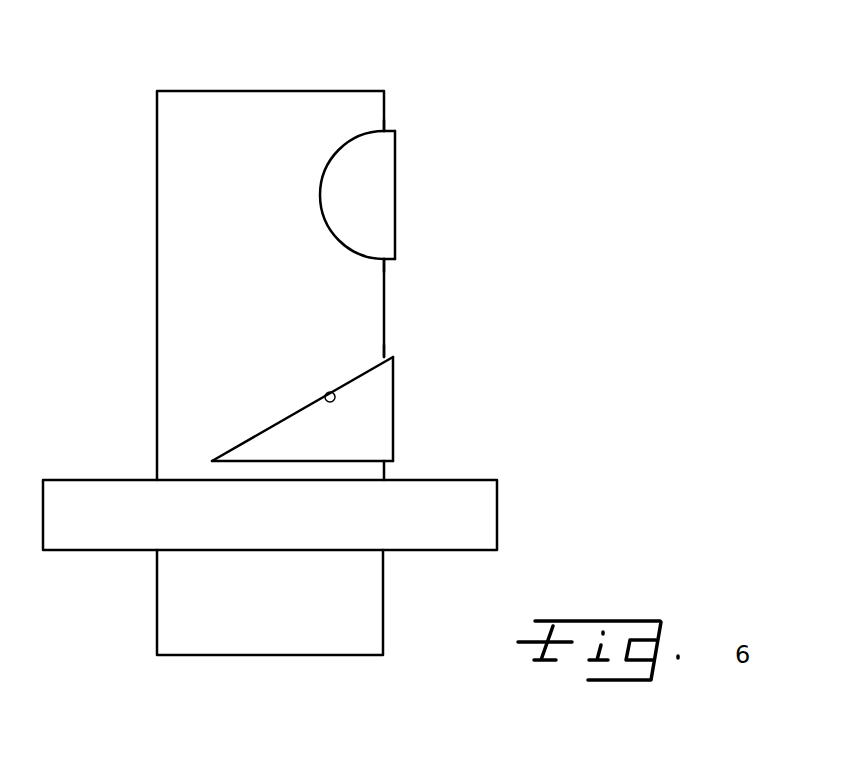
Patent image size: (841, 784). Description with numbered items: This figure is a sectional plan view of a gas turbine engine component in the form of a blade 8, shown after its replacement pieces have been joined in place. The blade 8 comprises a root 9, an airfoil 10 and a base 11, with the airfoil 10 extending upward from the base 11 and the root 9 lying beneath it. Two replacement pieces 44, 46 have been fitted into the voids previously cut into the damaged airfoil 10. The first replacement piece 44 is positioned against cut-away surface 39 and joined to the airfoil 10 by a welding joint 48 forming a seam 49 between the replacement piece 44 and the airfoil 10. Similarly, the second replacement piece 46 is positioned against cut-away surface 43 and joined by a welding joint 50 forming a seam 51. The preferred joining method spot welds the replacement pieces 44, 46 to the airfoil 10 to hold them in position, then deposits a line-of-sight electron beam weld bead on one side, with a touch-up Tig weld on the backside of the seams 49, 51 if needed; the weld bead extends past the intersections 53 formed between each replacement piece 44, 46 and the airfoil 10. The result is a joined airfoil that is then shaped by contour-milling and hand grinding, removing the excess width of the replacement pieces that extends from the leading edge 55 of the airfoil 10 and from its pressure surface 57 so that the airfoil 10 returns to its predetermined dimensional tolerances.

The blade 8 is at (330, 567).
The root 9 is at (383, 605).
The airfoil 10 is at (335, 252).
The base 11 is at (497, 513).
The cut-away surface 39 is at (323, 224).
The cut-away surface 43 is at (322, 393).
The replacement piece 44 is at (362, 184).
The replacement piece 46 is at (331, 401).
The welding joint 48 is at (350, 195).
The seam 49 is at (363, 131).
The welding joint 50 is at (303, 455).
The seam 51 is at (252, 434).
The intersections 53 is at (391, 125).
The leading edge 55 is at (385, 303).
The pressure surface 57 is at (278, 291).